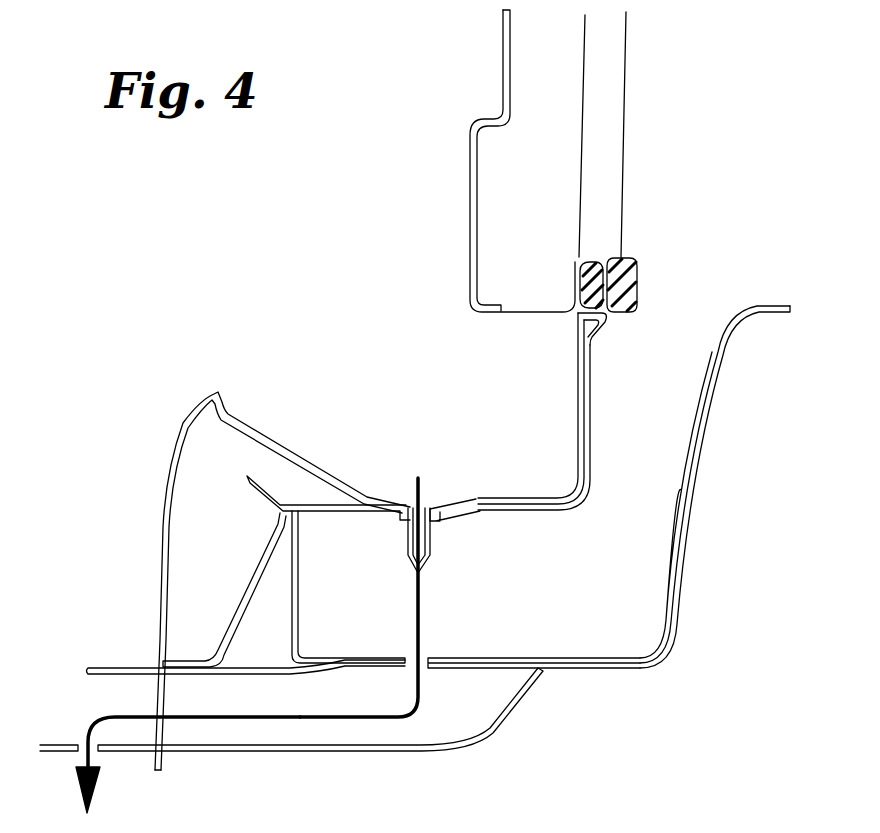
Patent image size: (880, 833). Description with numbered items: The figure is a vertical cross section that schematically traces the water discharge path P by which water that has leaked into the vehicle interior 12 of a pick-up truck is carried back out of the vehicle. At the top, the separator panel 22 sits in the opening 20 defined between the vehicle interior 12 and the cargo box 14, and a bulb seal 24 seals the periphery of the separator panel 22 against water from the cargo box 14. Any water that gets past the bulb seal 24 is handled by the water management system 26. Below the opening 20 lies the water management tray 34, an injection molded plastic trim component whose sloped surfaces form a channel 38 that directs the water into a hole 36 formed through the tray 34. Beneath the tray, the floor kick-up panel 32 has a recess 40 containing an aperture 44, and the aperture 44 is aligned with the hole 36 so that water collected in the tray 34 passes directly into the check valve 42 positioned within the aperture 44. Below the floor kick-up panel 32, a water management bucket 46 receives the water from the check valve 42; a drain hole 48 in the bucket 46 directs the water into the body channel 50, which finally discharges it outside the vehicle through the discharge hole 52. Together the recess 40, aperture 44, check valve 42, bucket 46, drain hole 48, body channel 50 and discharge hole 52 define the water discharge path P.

The vehicle interior 12 is at (357, 208).
The cargo box 14 is at (721, 254).
The opening 20 is at (562, 320).
The separator panel 22 is at (502, 78).
The bulb seal 24 is at (598, 247).
The water management system 26 is at (276, 302).
The floor kick-up panel 32 is at (342, 510).
The water management tray 34 is at (255, 425).
The hole 36 is at (410, 503).
The channel 38 is at (432, 505).
The recess 40 is at (460, 503).
The check valve 42 is at (398, 560).
The aperture 44 is at (405, 525).
The water management bucket 46 is at (297, 623).
The drain hole 48 is at (425, 670).
The body channel 50 is at (203, 742).
The discharge hole 52 is at (78, 746).
The water discharge path P is at (312, 720).